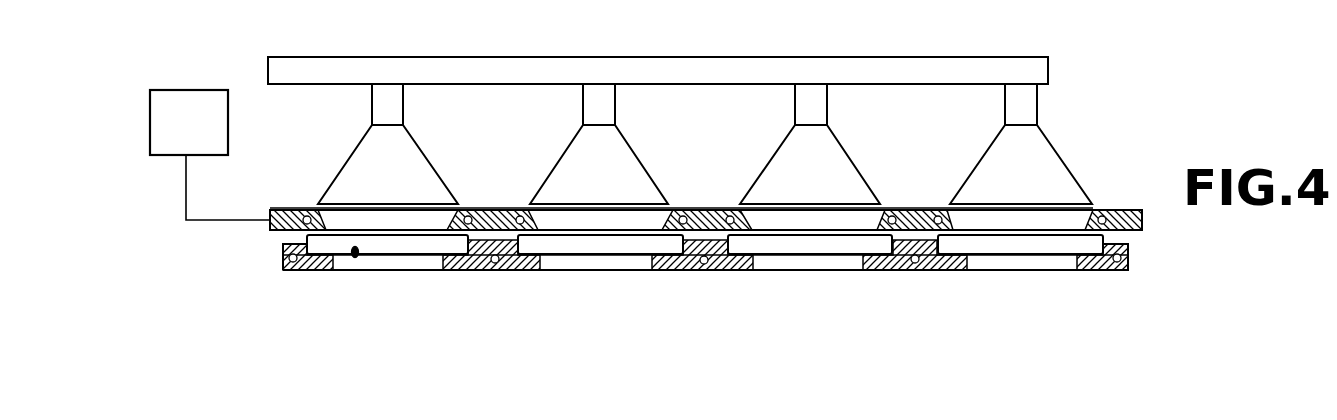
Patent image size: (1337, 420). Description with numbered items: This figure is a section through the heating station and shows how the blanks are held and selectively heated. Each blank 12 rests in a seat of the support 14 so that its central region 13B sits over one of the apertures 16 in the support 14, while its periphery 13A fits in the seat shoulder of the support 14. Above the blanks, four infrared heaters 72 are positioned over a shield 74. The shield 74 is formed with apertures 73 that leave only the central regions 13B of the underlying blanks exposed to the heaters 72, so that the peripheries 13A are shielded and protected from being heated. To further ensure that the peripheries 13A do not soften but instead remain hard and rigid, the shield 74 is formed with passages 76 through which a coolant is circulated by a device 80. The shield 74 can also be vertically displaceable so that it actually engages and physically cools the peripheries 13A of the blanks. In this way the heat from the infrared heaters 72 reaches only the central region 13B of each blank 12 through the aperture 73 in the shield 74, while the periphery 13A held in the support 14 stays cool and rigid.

The device 80 is at (183, 110).
The infrared heater 72 is at (1048, 173).
The passage 76 is at (939, 214).
The shield 74 is at (1124, 210).
The aperture 73 is at (988, 220).
The support 14 is at (307, 270).
The blank 12 is at (356, 256).
The aperture 16 is at (417, 262).
The periphery 13A is at (536, 245).
The central region 13B is at (605, 245).